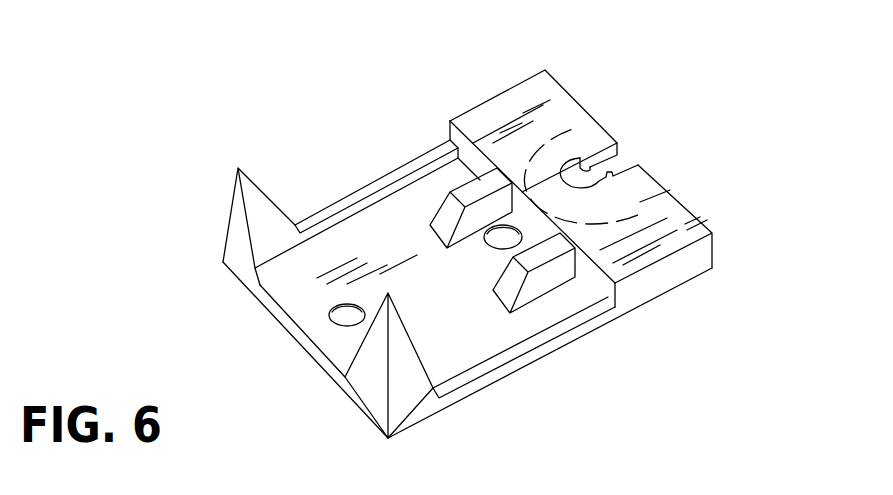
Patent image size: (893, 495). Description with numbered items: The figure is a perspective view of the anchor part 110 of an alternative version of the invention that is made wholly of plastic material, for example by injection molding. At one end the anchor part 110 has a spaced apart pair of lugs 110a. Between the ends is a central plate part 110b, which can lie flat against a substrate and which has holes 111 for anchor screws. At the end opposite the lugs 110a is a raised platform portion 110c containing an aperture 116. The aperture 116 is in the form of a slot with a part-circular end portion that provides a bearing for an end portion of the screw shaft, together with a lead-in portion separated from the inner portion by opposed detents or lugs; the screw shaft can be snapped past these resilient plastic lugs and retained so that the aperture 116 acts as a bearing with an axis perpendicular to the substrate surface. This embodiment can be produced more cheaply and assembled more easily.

The anchor part 110 is at (696, 143).
The lugs 110a is at (244, 176).
The central plate part 110b is at (290, 287).
The raised platform portion 110c is at (518, 100).
The holes 111 is at (343, 320).
The aperture 116 is at (630, 156).